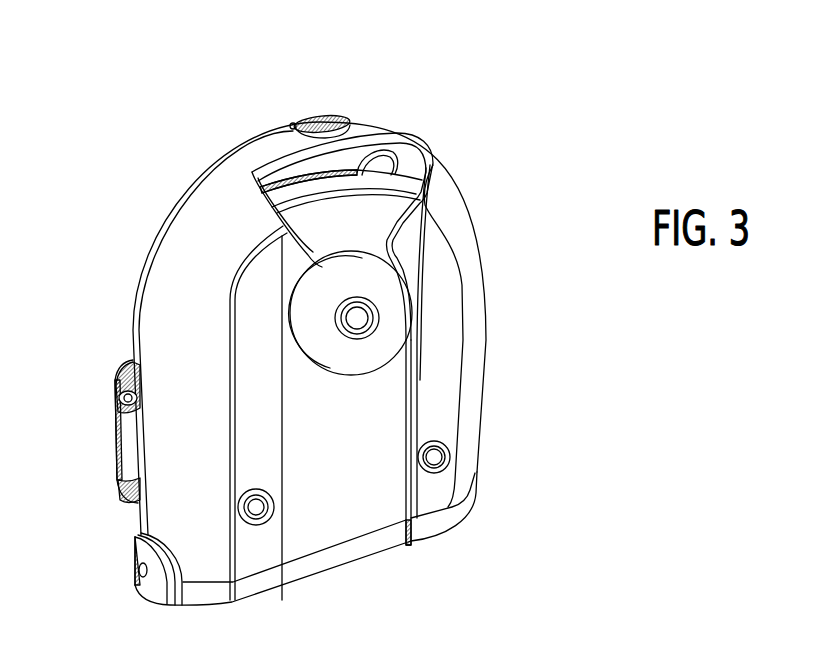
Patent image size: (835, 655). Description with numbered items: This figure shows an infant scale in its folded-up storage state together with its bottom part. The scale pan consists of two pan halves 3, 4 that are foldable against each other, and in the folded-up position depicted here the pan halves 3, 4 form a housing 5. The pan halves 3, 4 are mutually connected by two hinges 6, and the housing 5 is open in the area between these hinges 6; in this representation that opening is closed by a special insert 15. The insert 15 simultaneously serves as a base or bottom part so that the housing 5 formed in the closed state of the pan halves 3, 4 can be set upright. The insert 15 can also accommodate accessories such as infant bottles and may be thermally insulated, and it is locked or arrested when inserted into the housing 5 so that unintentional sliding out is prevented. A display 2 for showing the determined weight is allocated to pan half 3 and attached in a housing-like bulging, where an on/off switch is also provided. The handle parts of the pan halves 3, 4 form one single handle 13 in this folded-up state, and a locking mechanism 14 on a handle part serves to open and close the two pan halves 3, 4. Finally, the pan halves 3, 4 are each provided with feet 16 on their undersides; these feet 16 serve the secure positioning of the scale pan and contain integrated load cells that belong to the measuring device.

The display 2 is at (123, 437).
The pan half 3 is at (158, 224).
The pan half 4 is at (208, 394).
The housing 5 is at (545, 188).
The hinge 6 is at (142, 572).
The hook 13 is at (371, 124).
The locking mechanism 14 is at (322, 115).
The insert 15 is at (342, 553).
The feet 16 is at (358, 319).